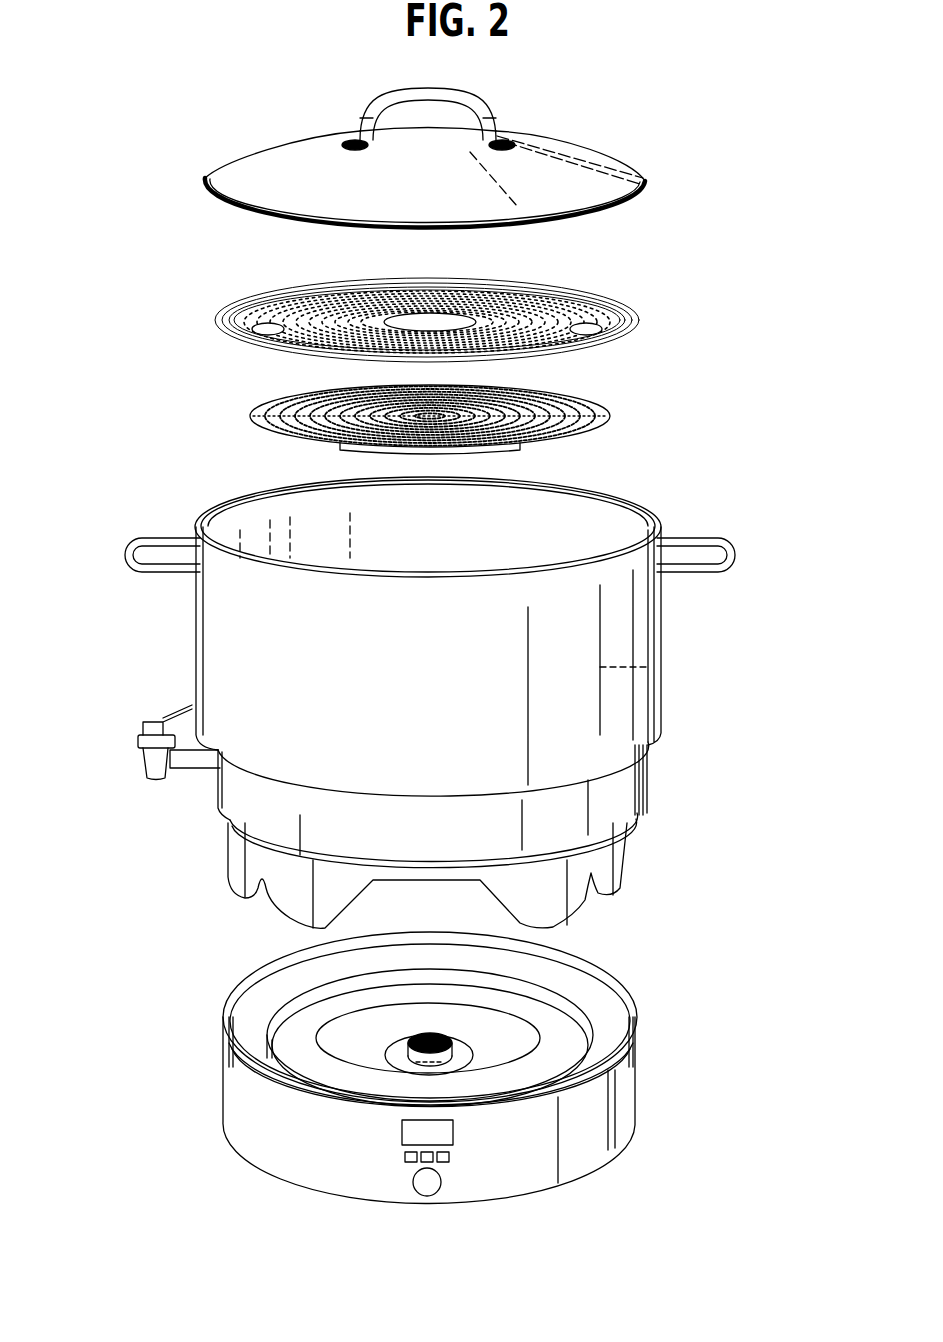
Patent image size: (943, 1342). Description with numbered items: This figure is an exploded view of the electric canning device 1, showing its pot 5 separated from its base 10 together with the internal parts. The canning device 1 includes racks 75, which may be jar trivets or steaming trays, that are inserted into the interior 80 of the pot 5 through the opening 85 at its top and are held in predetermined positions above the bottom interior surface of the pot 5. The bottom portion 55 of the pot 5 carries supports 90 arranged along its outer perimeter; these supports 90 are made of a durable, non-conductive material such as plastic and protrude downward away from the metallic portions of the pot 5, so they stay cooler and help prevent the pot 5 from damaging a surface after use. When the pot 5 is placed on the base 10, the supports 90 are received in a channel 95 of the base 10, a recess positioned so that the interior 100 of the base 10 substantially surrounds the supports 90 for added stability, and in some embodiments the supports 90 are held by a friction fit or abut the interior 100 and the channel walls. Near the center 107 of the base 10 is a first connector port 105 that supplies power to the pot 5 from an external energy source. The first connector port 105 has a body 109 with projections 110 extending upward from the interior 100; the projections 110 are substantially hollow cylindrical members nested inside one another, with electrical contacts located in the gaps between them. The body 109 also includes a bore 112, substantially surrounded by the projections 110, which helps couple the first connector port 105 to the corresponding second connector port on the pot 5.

The canning device 1 is at (55, 188).
The pot 5 is at (664, 672).
The base 10 is at (578, 1210).
The bottom portion 55 is at (648, 843).
The racks 75 is at (220, 333).
The interior 80 is at (616, 664).
The opening 85 is at (566, 525).
The supports 90 is at (228, 855).
The channel 95 is at (247, 1018).
The interior 100 is at (260, 1065).
The first connector port 105 is at (432, 1072).
The center 107 is at (403, 1032).
The body 109 is at (456, 1048).
The projections 110 is at (386, 1064).
The bore 112 is at (440, 1034).